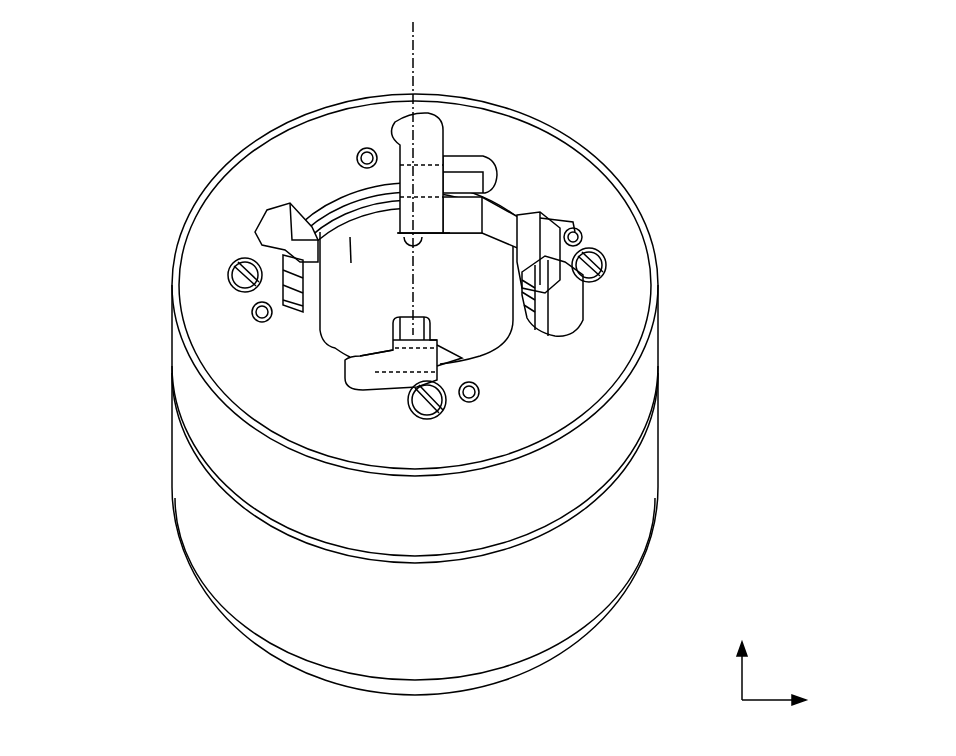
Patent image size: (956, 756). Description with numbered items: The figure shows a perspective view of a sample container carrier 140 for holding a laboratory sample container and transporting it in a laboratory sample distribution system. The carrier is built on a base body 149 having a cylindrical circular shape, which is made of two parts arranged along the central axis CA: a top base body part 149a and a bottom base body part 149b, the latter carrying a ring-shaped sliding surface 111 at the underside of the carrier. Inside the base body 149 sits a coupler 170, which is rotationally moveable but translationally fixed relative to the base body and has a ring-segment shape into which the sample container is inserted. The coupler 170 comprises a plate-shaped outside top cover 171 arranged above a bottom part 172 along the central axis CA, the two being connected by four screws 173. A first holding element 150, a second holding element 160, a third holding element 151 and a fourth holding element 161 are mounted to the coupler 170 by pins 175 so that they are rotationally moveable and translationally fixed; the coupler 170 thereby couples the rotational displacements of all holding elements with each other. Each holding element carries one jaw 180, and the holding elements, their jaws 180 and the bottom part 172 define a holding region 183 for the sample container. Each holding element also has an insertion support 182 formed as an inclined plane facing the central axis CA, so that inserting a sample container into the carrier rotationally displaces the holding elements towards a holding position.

The sample container carrier 140 is at (161, 105).
The sliding surface 111 is at (190, 583).
The base body 149 is at (660, 378).
The top base body part 149a is at (660, 362).
The bottom base body part 149b is at (660, 478).
The first holding element 150 is at (307, 289).
The third holding element 151 is at (430, 140).
The second holding element 160 is at (520, 314).
The fourth holding element 161 is at (343, 368).
The coupler 170 is at (333, 200).
The outside top cover 171 is at (290, 183).
The bottom part 172 is at (387, 250).
The screws 173 is at (232, 270).
The pins 175 is at (252, 315).
The jaws 180 is at (527, 300).
The insertion support 182 is at (543, 214).
The holding region 183 is at (487, 298).
The central axis CA is at (413, 42).